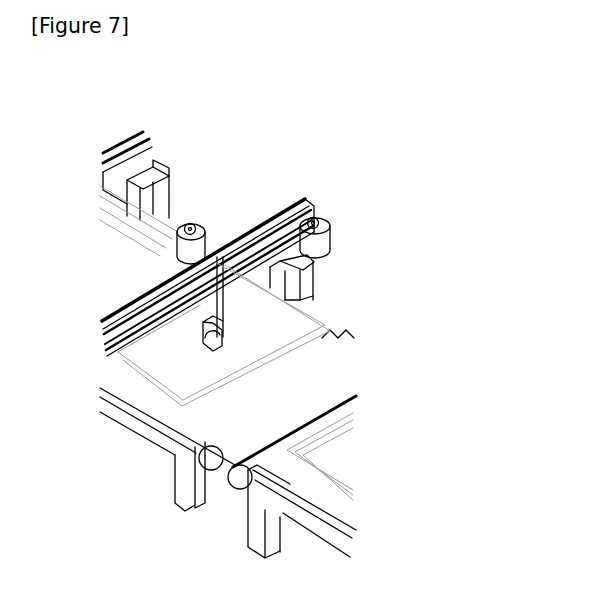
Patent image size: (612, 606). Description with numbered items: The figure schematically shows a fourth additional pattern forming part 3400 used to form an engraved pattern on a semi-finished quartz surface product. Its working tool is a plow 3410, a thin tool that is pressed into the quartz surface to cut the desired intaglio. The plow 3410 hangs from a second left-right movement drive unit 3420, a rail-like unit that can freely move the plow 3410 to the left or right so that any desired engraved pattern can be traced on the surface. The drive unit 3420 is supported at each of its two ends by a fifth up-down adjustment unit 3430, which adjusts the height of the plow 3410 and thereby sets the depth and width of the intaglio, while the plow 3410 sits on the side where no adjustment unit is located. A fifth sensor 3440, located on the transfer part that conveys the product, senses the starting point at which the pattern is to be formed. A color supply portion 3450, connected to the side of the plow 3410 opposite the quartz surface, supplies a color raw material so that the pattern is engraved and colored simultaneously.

The fourth additional pattern forming part 3400 is at (327, 150).
The plow 3410 is at (236, 332).
The second left-right movement drive unit 3420 is at (134, 315).
The fifth up-down adjustment unit 3430 is at (302, 216).
The fifth sensor 3440 is at (262, 370).
The color supply portion 3450 is at (202, 218).